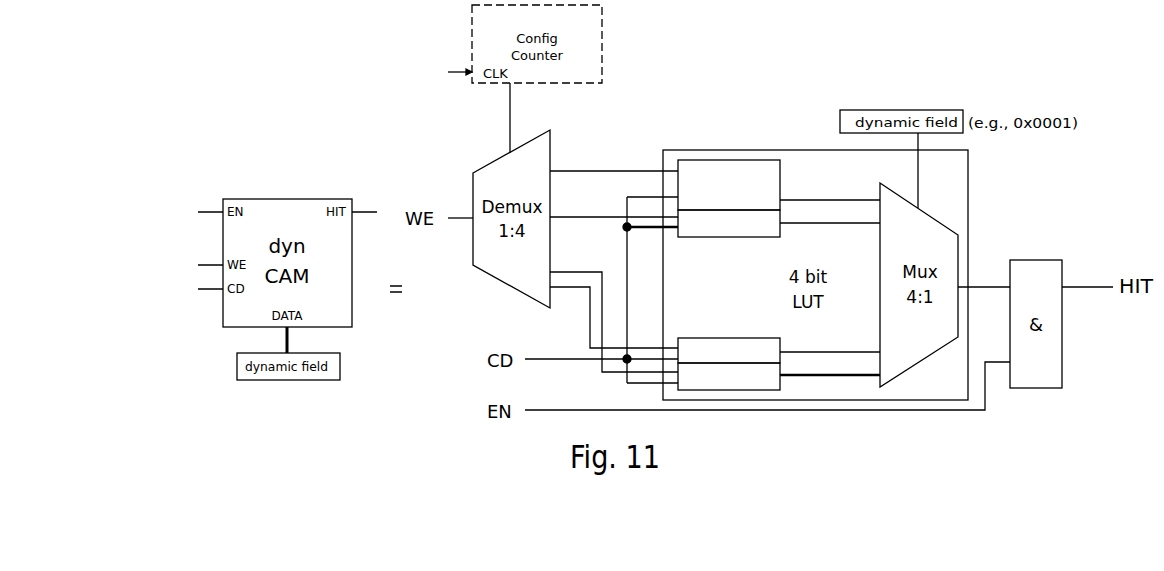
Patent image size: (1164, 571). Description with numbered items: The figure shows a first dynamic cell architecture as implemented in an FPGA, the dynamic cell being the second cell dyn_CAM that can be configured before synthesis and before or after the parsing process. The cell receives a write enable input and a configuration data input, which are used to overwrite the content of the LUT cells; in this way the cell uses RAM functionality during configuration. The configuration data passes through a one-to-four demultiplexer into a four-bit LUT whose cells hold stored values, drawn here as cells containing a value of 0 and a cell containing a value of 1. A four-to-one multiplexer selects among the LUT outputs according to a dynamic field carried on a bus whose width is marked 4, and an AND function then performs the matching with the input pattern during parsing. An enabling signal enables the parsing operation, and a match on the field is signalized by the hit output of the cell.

The LUT cell storing value 0 is at (729, 275).
The LUT cell storing value 1 is at (729, 223).
The 4-bit bus width indicator 4 is at (923, 187).